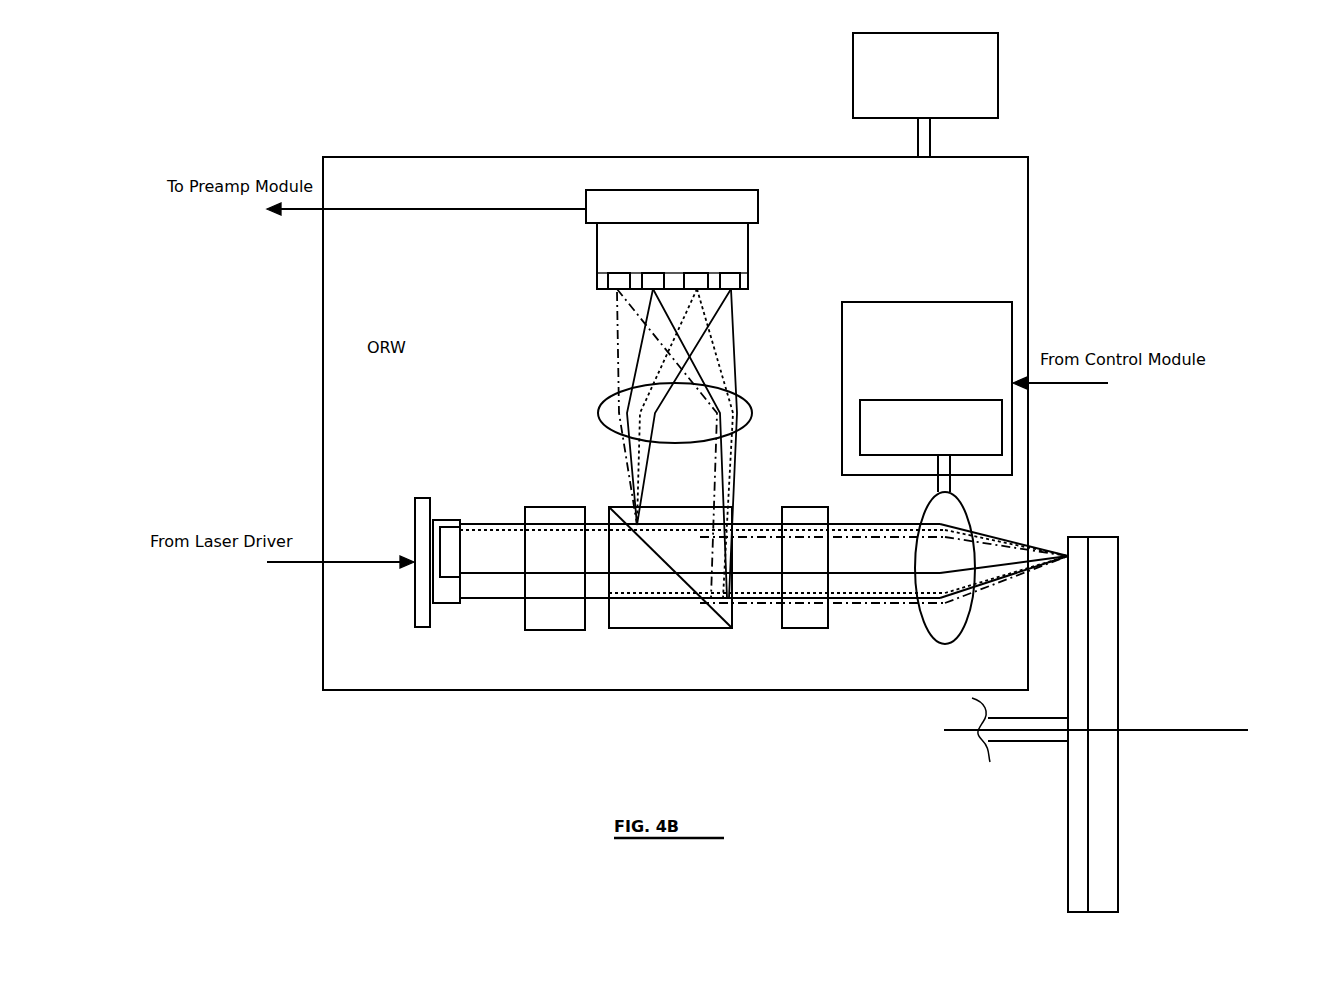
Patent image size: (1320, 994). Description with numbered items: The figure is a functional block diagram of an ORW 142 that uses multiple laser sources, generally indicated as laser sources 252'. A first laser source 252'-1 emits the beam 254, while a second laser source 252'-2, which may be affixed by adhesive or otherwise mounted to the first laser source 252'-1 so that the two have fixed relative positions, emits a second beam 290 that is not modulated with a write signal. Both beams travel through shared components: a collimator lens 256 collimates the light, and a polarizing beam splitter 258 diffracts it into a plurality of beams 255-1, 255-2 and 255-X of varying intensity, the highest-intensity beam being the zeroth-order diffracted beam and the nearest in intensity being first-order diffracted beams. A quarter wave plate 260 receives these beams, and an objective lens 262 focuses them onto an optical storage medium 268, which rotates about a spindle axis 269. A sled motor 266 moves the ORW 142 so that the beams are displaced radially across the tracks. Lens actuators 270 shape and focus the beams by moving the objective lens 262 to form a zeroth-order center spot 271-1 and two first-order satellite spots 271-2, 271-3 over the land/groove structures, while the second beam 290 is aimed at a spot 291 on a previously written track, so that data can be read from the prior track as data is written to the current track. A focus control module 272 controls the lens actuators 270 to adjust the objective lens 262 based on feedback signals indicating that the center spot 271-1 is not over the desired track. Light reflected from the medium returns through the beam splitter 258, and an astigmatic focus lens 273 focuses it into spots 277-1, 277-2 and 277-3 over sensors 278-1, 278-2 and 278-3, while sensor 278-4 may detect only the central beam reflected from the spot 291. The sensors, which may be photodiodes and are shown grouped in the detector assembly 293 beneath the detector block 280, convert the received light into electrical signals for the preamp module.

The ORW 142 is at (1028, 236).
The sled motor 266 is at (998, 63).
The detector module 280 is at (597, 228).
The sensor 278-1 is at (664, 273).
The sensor 278-2 is at (608, 275).
The sensor 278-3 is at (712, 275).
The sensor 278-4 is at (738, 273).
The detector array 293 is at (742, 290).
The spot 277-1 is at (620, 312).
The spot 277-2 is at (612, 290).
The spot 277-3 is at (698, 273).
The astigmatic focus lens 273 is at (752, 413).
The focus control module 272 is at (905, 302).
The lens actuators 270 is at (875, 400).
The objective lens 262 is at (940, 645).
The laser sources 252' is at (428, 551).
The beam 254 is at (510, 520).
The first laser source 252'-1 is at (391, 543).
The second laser source 252'-2 is at (403, 554).
The second beam 290 is at (497, 578).
The laser beam 255-1 is at (893, 487).
The laser beam 255-2 is at (768, 524).
The laser beam 255-X is at (893, 538).
The collimator lens 256 is at (547, 630).
The polarizing beam splitter 258 is at (673, 630).
The quarter wave plate 260 is at (805, 630).
The optical storage medium 268 is at (1086, 537).
The spindle axis 269 is at (1220, 730).
The spot 291 is at (1068, 556).
The zeroth-order center spot 271-1 is at (1068, 557).
The first-order satellite spot 271-2 is at (1068, 554).
The first-order satellite spot 271-3 is at (1068, 560).